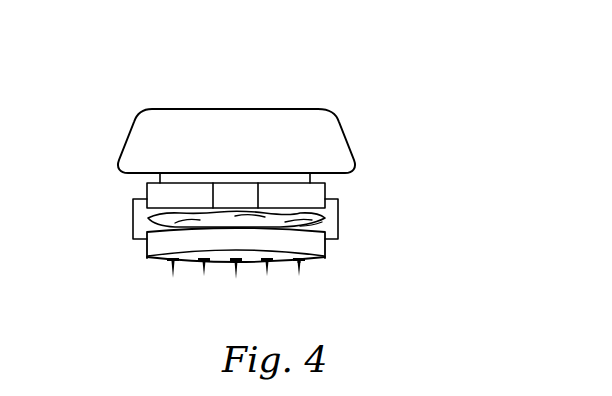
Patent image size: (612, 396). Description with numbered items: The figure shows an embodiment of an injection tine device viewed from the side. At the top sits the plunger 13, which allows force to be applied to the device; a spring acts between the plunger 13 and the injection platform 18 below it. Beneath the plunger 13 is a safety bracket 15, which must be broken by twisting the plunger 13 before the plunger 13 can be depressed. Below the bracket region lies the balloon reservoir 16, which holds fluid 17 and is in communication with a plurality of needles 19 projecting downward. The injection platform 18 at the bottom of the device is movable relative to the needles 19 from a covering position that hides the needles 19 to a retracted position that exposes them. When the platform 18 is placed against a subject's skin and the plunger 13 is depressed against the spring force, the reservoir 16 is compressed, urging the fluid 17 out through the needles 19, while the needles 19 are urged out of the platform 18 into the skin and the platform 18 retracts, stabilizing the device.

The plunger 13 is at (218, 108).
The safety bracket 15 is at (133, 223).
The balloon reservoir 16 is at (325, 218).
The fluid 17 is at (322, 222).
The injection platform 18 is at (191, 266).
The needles 19 is at (300, 272).